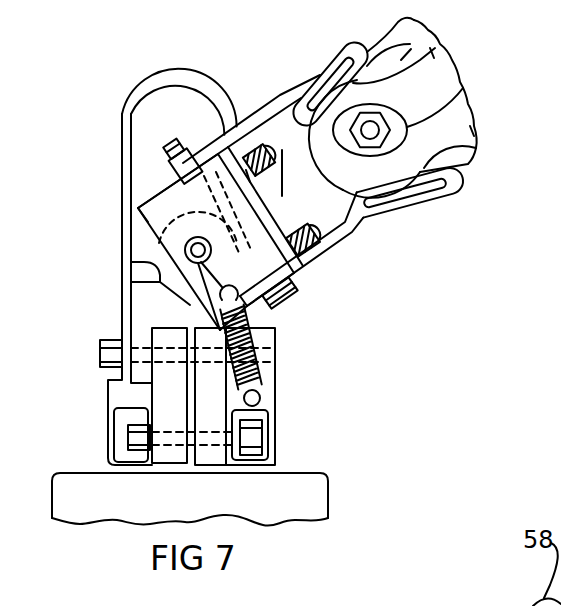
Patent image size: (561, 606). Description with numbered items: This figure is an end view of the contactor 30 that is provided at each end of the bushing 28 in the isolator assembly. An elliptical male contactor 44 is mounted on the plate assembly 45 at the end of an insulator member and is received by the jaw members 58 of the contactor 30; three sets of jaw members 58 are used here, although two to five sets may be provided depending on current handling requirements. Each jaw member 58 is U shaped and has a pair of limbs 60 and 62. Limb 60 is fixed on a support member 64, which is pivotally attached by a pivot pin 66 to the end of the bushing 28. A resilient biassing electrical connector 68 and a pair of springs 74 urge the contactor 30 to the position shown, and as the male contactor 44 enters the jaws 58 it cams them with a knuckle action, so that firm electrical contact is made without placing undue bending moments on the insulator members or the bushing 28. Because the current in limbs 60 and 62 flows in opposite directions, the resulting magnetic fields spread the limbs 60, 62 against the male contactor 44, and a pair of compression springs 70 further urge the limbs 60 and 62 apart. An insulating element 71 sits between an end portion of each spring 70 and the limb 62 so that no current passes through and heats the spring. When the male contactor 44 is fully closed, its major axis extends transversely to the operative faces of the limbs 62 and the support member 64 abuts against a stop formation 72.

The bushing 28 is at (310, 492).
The contactor 30 is at (289, 58).
The male contactor 44 is at (446, 96).
The plate assembly 45 is at (412, 44).
The jaw members 58 is at (395, 31).
The limb 60 is at (308, 87).
The limb 62 is at (436, 57).
The support member 64 is at (140, 215).
The pivot pin 66 is at (192, 290).
The resilient biassing electrical connector 68 is at (137, 83).
The compression springs 70 is at (305, 230).
The insulating element 71 is at (287, 177).
The stop formation 72 is at (126, 265).
The springs 74 is at (262, 353).